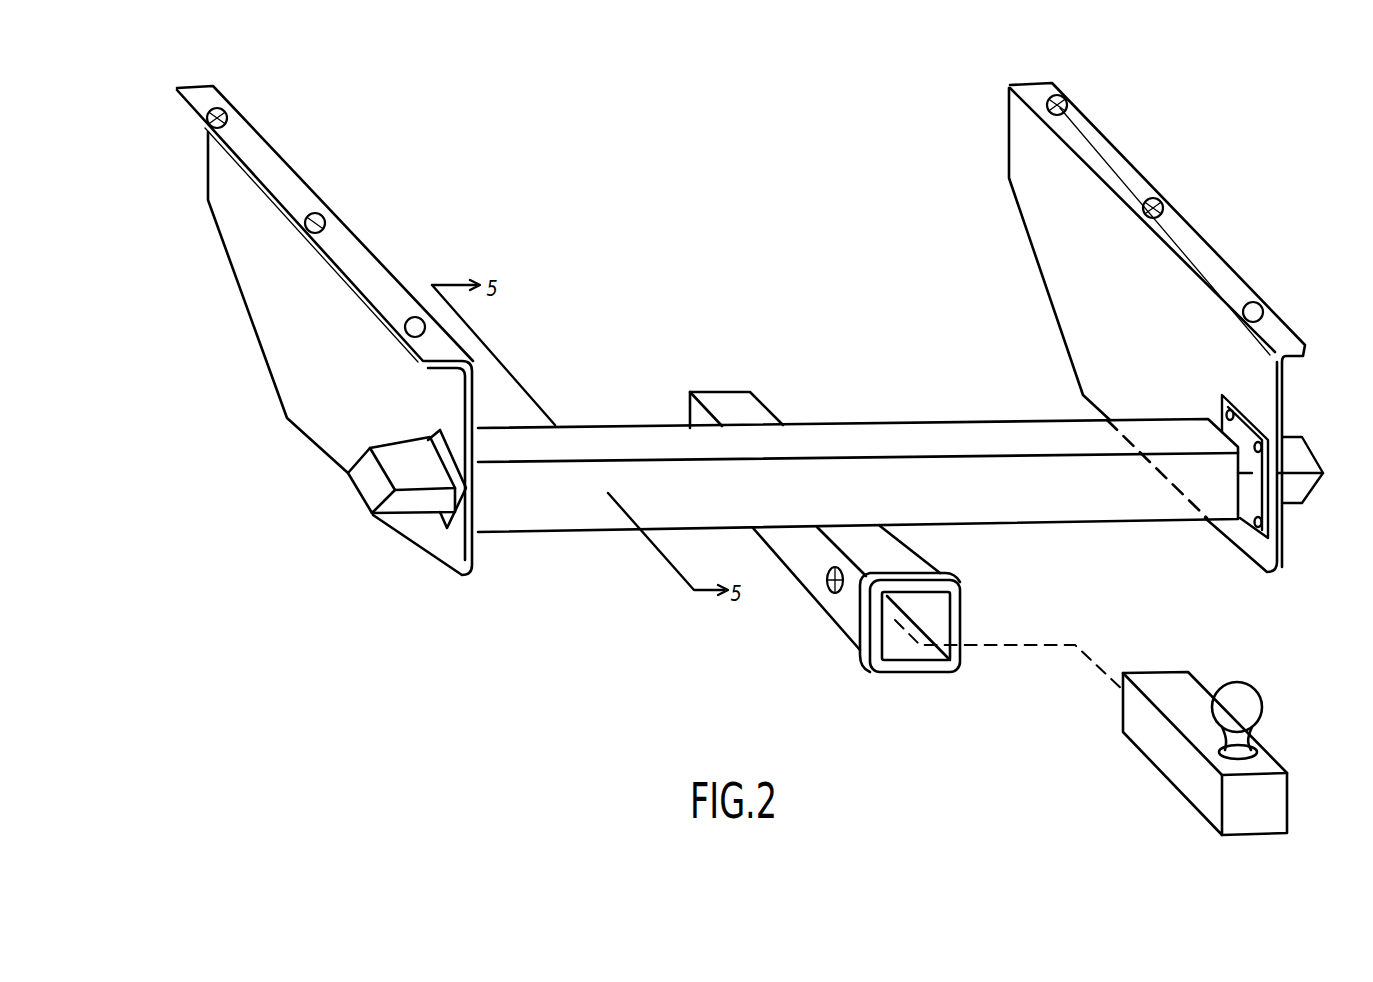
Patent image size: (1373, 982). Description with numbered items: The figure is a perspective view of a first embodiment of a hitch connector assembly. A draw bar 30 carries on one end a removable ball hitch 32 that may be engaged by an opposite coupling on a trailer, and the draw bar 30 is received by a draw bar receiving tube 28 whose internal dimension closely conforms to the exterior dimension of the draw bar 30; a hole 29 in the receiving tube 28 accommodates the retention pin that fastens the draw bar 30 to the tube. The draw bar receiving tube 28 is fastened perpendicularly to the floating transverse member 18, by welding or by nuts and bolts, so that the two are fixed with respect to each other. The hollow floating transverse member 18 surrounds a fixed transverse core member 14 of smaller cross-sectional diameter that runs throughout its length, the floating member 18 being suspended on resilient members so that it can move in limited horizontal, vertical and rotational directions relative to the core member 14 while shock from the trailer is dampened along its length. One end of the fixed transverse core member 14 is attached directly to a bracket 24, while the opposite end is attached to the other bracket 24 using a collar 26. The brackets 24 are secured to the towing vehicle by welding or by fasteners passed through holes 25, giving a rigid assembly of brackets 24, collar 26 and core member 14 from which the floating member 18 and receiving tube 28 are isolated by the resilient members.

The fixed transverse core member 14 is at (360, 500).
The floating transverse member 18 is at (560, 443).
The bracket 24 is at (250, 140).
The fastener holes 25 is at (307, 217).
The collar 26 is at (1255, 510).
The draw bar receiving tube 28 is at (960, 603).
The pin hole 29 is at (826, 580).
The draw bar 30 is at (1157, 740).
The ball hitch 32 is at (1256, 705).